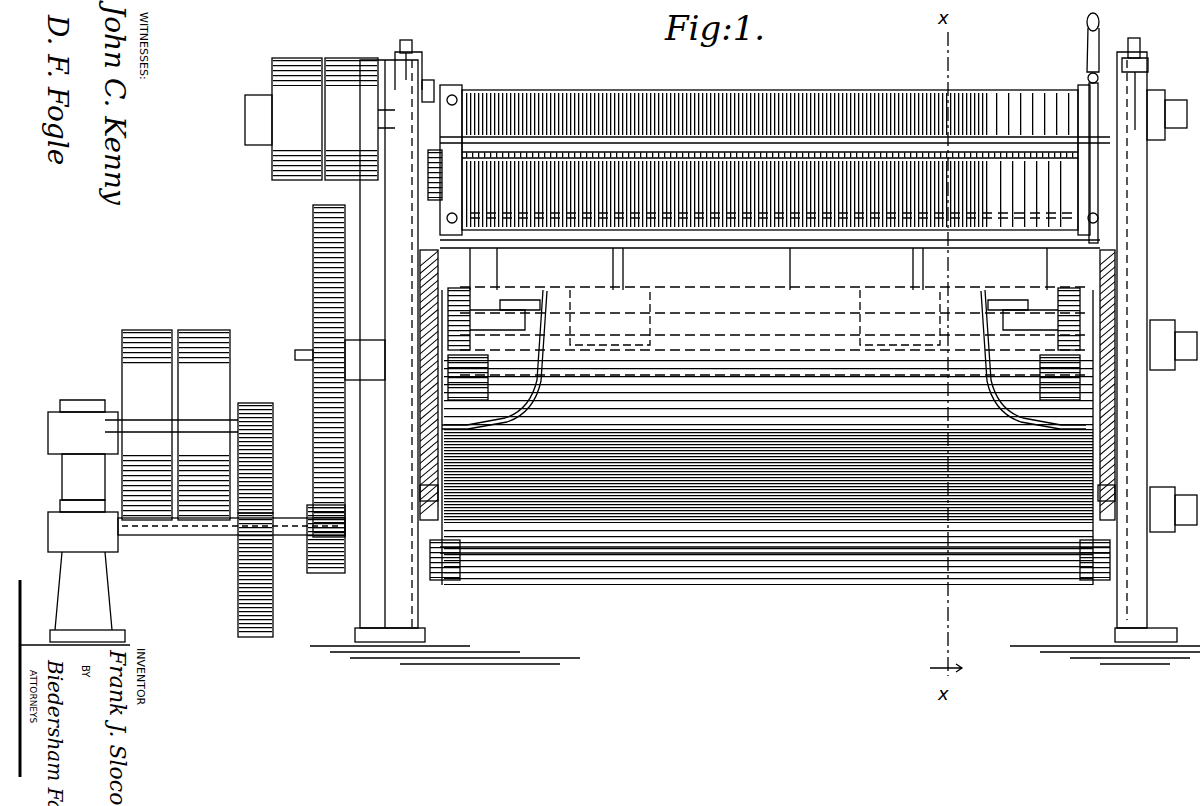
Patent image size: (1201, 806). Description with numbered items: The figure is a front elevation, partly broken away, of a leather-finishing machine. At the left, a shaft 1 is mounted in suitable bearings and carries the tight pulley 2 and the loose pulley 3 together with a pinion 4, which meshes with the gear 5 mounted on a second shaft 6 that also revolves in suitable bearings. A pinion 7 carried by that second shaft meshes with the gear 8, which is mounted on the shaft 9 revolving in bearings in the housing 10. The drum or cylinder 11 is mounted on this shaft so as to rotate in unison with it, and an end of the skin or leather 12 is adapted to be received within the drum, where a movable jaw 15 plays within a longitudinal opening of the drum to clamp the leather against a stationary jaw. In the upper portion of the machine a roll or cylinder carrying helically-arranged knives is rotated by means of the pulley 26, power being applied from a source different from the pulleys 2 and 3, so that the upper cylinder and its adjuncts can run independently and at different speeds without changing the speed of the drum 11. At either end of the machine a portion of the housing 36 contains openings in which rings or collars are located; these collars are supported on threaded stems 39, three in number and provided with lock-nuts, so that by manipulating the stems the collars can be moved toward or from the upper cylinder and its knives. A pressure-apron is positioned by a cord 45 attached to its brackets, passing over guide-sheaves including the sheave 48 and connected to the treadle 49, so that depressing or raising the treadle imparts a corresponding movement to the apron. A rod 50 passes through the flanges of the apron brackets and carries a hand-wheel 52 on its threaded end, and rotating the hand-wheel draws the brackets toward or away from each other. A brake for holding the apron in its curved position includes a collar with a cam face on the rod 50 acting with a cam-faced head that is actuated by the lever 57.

The shaft 1 is at (48, 426).
The tight pulley 2 is at (147, 332).
The loose pulley 3 is at (195, 332).
The pinion 4 is at (258, 403).
The gear 5 is at (262, 637).
The shaft 6 is at (190, 535).
The pinion 7 is at (330, 573).
The gear 8 is at (312, 228).
The shaft 9 is at (520, 365).
The housing 10 is at (755, 358).
The drum or cylinder 11 is at (812, 302).
The skin or leather 12 is at (633, 92).
The movable jaw 15 is at (700, 242).
The pulley 26 is at (338, 58).
The housing portion 36 is at (428, 62).
The threaded stem 39 is at (405, 40).
The cord 45 is at (420, 262).
The guide-sheave 48 is at (420, 491).
The treadle 49 is at (1000, 555).
The rod 50 is at (1040, 160).
The hand-wheel 52 is at (425, 182).
The lever 57 is at (1100, 34).